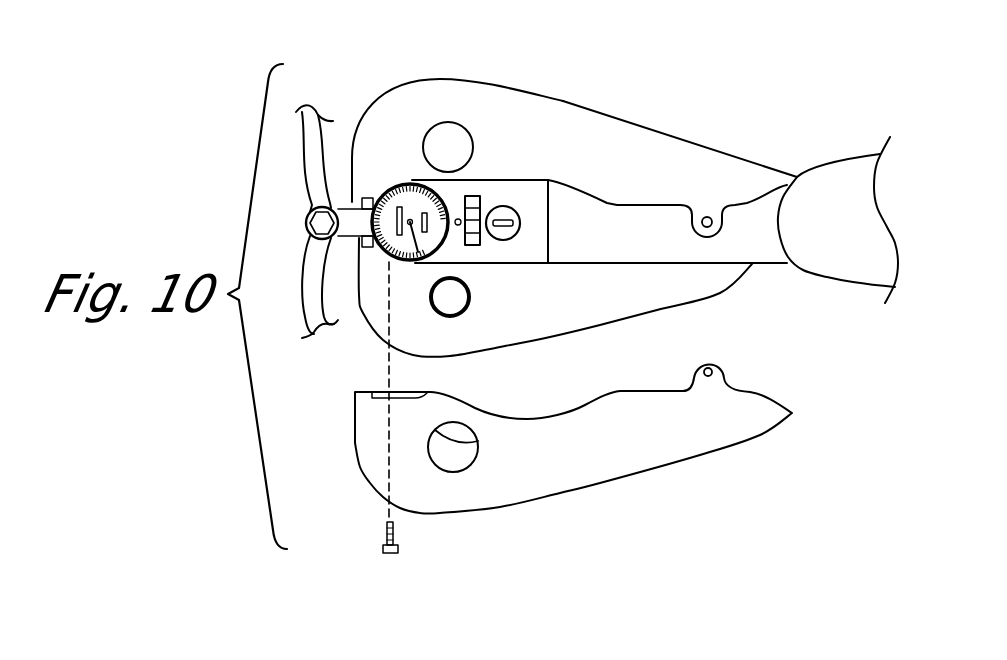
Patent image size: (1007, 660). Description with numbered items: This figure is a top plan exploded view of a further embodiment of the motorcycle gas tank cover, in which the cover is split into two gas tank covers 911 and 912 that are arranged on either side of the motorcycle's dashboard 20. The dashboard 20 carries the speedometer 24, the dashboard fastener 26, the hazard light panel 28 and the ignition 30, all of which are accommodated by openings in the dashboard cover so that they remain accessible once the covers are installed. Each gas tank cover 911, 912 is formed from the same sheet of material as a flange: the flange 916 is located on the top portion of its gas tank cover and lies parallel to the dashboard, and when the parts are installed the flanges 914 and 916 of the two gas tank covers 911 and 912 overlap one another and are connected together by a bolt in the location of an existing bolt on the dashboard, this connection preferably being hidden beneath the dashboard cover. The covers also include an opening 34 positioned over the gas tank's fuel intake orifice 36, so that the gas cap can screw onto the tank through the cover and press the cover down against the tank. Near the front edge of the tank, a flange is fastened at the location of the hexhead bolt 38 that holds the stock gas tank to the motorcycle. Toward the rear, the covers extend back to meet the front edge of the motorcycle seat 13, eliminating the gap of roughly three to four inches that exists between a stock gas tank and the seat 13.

The motorcycle seat 13 is at (827, 180).
The dashboard 20 is at (527, 252).
The speedometer 24 is at (405, 187).
The dashboard fastener 26 is at (458, 219).
The hazard light panel 28 is at (477, 196).
The ignition 30 is at (503, 205).
The opening 34 is at (450, 473).
The intake orifice 36 is at (458, 318).
The bolt 38 is at (385, 523).
The gas tank cover 911 is at (625, 465).
The gas tank cover 912 is at (620, 153).
The flange 914 is at (703, 215).
The flange 916 is at (715, 363).